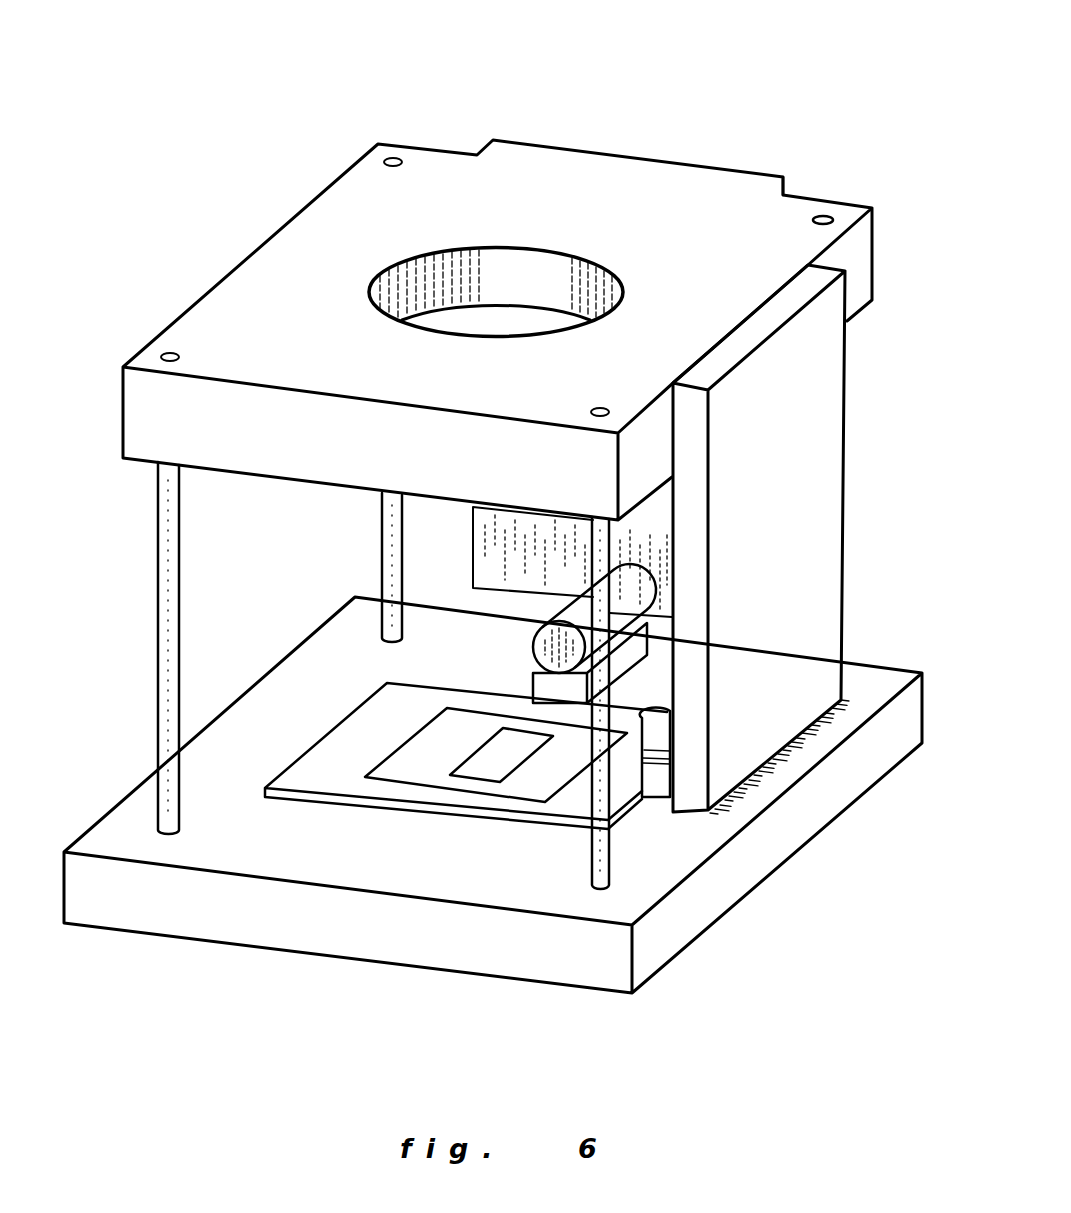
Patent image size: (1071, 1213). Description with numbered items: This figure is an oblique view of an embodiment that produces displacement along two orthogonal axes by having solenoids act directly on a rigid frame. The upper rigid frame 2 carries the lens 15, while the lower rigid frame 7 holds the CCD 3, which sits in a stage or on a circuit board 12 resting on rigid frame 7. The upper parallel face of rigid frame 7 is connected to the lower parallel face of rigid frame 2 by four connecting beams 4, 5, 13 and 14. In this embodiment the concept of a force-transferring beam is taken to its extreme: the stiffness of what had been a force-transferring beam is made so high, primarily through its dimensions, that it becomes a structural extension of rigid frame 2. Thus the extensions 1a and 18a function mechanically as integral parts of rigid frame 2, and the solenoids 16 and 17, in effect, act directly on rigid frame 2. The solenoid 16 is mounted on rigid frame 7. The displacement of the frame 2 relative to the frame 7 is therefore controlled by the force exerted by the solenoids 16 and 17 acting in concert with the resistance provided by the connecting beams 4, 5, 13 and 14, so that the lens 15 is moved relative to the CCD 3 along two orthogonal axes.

The extension 1a is at (808, 493).
The rigid frame 2 is at (778, 205).
The CCD 3 is at (503, 740).
The connecting beam 4 is at (827, 216).
The connecting beam 5 is at (653, 903).
The rigid frame 7 is at (196, 909).
The circuit board 12 is at (507, 822).
The connecting beam 13 is at (173, 683).
The connecting beam 14 is at (390, 548).
The lens 15 is at (508, 273).
The solenoid 16 is at (657, 755).
The solenoid 17 is at (577, 592).
The extension 18a is at (583, 180).